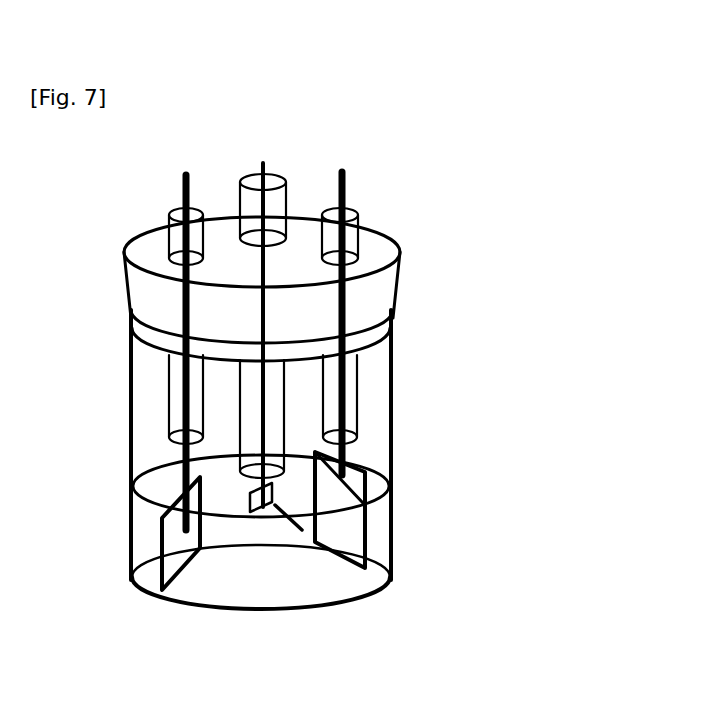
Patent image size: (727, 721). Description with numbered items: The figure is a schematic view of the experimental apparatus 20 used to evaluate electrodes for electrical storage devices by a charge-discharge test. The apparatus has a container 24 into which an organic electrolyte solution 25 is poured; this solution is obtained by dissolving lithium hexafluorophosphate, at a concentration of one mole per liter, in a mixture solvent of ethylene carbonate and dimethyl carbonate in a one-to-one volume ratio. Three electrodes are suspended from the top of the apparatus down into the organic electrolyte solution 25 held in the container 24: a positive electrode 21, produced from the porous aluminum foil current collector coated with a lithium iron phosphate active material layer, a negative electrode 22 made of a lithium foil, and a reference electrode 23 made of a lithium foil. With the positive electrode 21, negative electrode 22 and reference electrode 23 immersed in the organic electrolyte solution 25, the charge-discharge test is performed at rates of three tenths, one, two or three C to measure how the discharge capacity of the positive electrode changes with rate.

The experimental apparatus 20 is at (474, 242).
The positive electrode 21 is at (177, 545).
The negative electrode 22 is at (352, 517).
The reference electrode 23 is at (302, 531).
The container 24 is at (129, 370).
The organic electrolyte solution 25 is at (152, 518).